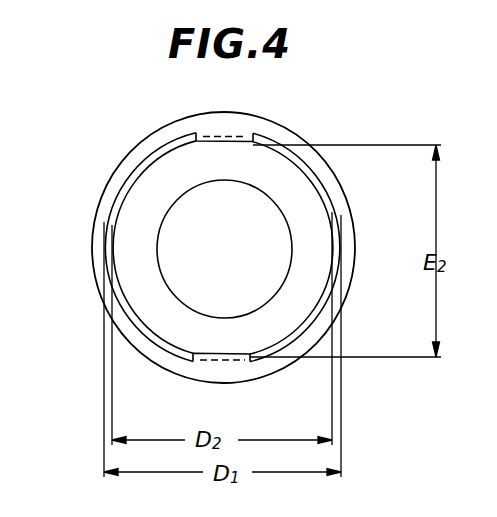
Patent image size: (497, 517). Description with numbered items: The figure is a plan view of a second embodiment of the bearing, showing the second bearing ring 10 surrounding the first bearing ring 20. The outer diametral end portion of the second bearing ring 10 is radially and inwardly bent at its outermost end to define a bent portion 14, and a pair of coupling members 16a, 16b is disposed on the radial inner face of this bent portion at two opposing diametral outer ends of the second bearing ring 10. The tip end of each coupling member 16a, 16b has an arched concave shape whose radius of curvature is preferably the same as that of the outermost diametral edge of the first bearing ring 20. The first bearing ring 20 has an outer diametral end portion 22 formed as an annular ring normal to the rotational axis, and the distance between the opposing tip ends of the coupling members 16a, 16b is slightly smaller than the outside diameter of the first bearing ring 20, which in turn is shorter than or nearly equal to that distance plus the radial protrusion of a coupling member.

The second bearing ring 10 is at (333, 182).
The bent portion 14 is at (135, 168).
The coupling member 16a is at (221, 143).
The coupling member 16b is at (214, 355).
The first bearing ring 20 is at (310, 240).
The outer diametral end portion 22 is at (118, 220).